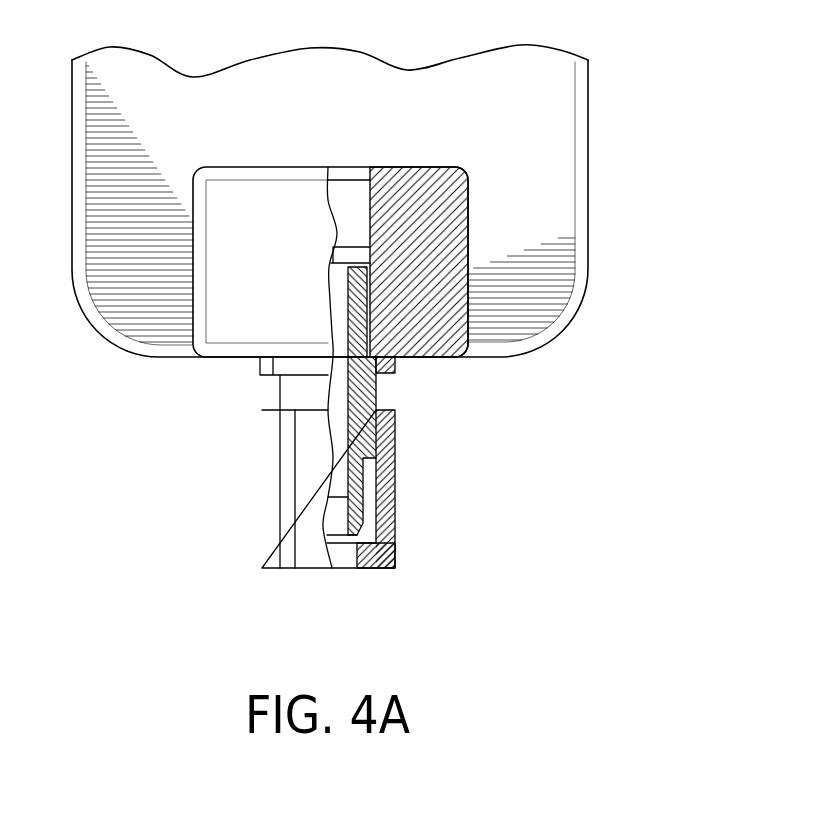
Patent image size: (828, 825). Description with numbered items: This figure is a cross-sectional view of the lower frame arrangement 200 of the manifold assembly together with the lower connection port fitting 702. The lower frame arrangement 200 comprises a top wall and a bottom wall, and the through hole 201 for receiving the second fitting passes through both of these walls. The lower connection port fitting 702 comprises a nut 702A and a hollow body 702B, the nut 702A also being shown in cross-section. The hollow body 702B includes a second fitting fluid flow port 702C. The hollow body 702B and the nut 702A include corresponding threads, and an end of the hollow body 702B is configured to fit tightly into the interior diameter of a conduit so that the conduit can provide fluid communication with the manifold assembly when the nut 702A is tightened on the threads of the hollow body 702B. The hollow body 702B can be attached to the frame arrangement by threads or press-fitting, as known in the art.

The lower frame arrangement 200 is at (477, 228).
The through hole 201 is at (350, 167).
The lower connection port fitting 702 is at (230, 478).
The nut 702A is at (268, 558).
The hollow body 702B is at (378, 373).
The second fitting fluid flow port 702C is at (333, 264).